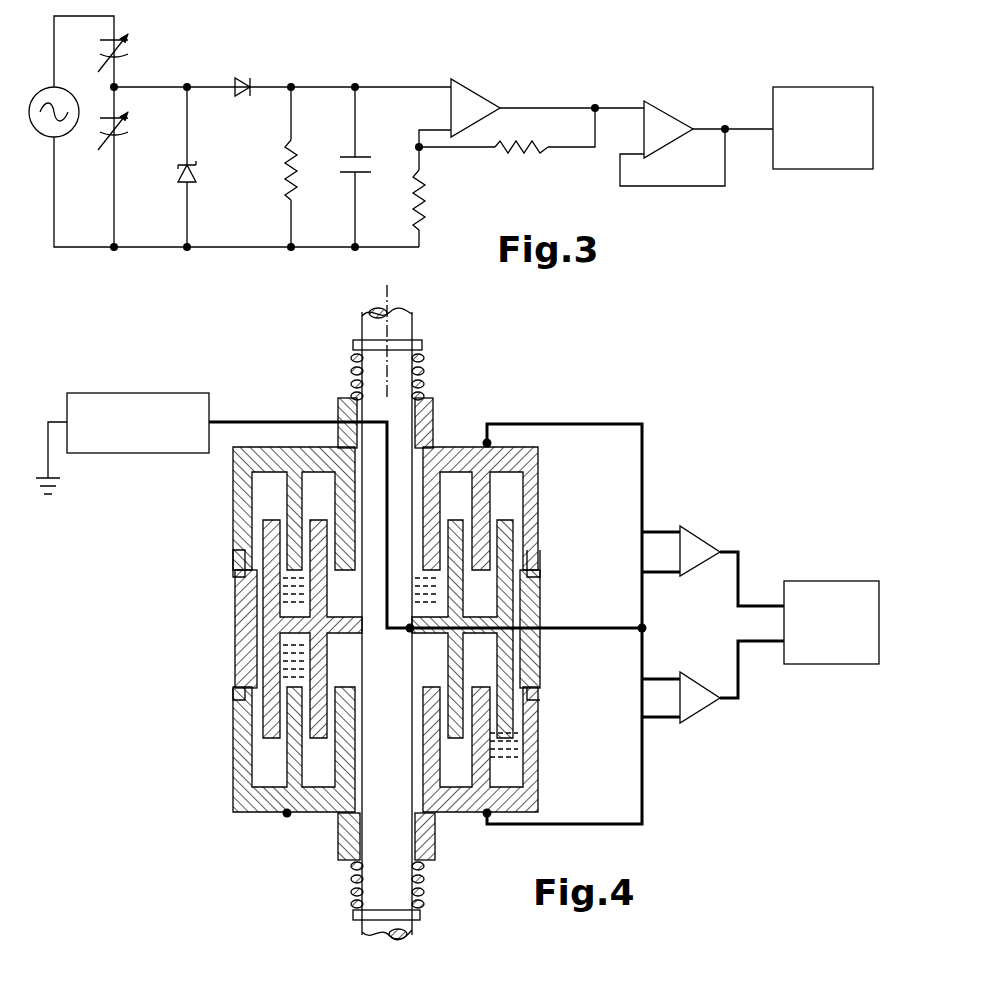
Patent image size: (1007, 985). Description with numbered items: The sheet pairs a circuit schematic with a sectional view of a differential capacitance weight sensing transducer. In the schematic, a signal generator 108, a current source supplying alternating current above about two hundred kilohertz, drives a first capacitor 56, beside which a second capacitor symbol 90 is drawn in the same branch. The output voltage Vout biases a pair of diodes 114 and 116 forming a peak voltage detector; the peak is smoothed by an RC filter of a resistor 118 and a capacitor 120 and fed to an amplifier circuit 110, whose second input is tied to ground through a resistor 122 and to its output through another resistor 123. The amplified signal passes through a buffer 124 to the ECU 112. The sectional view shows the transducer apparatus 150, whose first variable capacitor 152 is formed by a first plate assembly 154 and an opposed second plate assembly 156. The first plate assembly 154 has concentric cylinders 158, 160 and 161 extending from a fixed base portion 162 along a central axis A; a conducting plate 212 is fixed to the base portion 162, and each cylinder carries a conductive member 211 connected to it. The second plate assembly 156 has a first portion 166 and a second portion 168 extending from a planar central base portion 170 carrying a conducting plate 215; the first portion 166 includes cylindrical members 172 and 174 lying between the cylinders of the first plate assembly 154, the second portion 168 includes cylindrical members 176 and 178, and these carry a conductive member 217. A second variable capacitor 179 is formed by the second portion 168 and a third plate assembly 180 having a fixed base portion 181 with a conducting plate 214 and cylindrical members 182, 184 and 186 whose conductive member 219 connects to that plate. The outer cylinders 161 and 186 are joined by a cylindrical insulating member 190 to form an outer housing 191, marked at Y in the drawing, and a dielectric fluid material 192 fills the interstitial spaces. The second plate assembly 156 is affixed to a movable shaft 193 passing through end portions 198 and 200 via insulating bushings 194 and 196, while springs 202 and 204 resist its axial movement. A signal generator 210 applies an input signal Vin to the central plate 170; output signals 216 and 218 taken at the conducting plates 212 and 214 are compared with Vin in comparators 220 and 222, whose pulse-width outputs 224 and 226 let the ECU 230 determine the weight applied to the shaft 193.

In FIG. 3, the first capacitor 56 is at (128, 52).
In FIG. 3, the variable capacitor (sensor) 90 is at (124, 136).
In FIG. 3, the signal generator 108 is at (57, 138).
In FIG. 3, the amplifier circuit 110 is at (477, 92).
In FIG. 3, the ECU 112 is at (836, 87).
In FIG. 3, the diode 114 is at (196, 172).
In FIG. 3, the diode 116 is at (243, 80).
In FIG. 3, the resistor 118 is at (287, 176).
In FIG. 3, the capacitor 120 is at (362, 156).
In FIG. 3, the resistor 122 is at (428, 190).
In FIG. 3, the resistor 123 is at (503, 152).
In FIG. 3, the buffer 124 is at (678, 121).
In FIG. 4, the differential capacitance weight sensing transducer apparatus 150 is at (722, 435).
In FIG. 4, the first variable capacitor 152 is at (538, 510).
In FIG. 4, the first plate assembly 154 is at (232, 505).
In FIG. 4, the second plate assembly 156 is at (270, 612).
In FIG. 4, the elongated concentric cylinder 158 is at (468, 470).
In FIG. 4, the elongated concentric cylinder 160 is at (480, 517).
In FIG. 4, the outer cylindrical member 161 is at (232, 478).
In FIG. 4, the fixed base portion 162 is at (288, 458).
In FIG. 4, the first portion 166 is at (512, 542).
In FIG. 4, the second portion 168 is at (512, 765).
In FIG. 4, the central base portion 170 is at (493, 623).
In FIG. 4, the elongated concentric cylindrical member 172 is at (384, 626).
In FIG. 4, the elongated concentric cylindrical member 174 is at (507, 583).
In FIG. 4, the concentric cylindrical member 176 is at (463, 685).
In FIG. 4, the concentric cylindrical member 178 is at (515, 735).
In FIG. 4, the second variable capacitor 179 is at (240, 718).
In FIG. 4, the third plate assembly 180 is at (232, 778).
In FIG. 4, the fixed base portion 181 is at (440, 832).
In FIG. 4, the concentric cylindrical member 182 is at (306, 816).
In FIG. 4, the concentric cylindrical member 184 is at (270, 815).
In FIG. 4, the outer cylindrical member 186 is at (236, 730).
In FIG. 4, the cylindrical insulating member 190 is at (245, 657).
In FIG. 4, the outer housing 191 is at (232, 538).
In FIG. 4, the fluid material 192 is at (270, 512).
In FIG. 4, the movable shaft 193 is at (410, 753).
In FIG. 4, the insulating bushing 194 is at (430, 420).
In FIG. 4, the insulating bushing 196 is at (435, 833).
In FIG. 4, the end portion 198 is at (345, 398).
In FIG. 4, the end portion 200 is at (340, 840).
In FIG. 4, the spring 202 is at (352, 370).
In FIG. 4, the spring 204 is at (424, 888).
In FIG. 4, the signal generator 210 is at (140, 453).
In FIG. 4, the conductive member 211 is at (540, 470).
In FIG. 4, the conducting plate 212 is at (505, 424).
In FIG. 4, the conducting plate 214 is at (287, 816).
In FIG. 4, the conducting plate 215 is at (257, 652).
In FIG. 4, the output signal 216 is at (645, 485).
In FIG. 4, the conductive member 217 is at (467, 653).
In FIG. 4, the output signal 218 is at (645, 755).
In FIG. 4, the conductive member 219 is at (233, 757).
In FIG. 4, the comparator 220 is at (695, 528).
In FIG. 4, the comparator 222 is at (703, 717).
In FIG. 4, the output signal 224 is at (742, 580).
In FIG. 4, the output signal 226 is at (742, 655).
In FIG. 4, the ECU 230 is at (820, 665).
In FIG. 4, the central axis A is at (396, 288).
In FIG. 4, the section indicator Y is at (519, 466).
In FIG. 4, the input signal Vin is at (222, 420).
In FIG. 3, the output voltage signal Vout is at (118, 86).